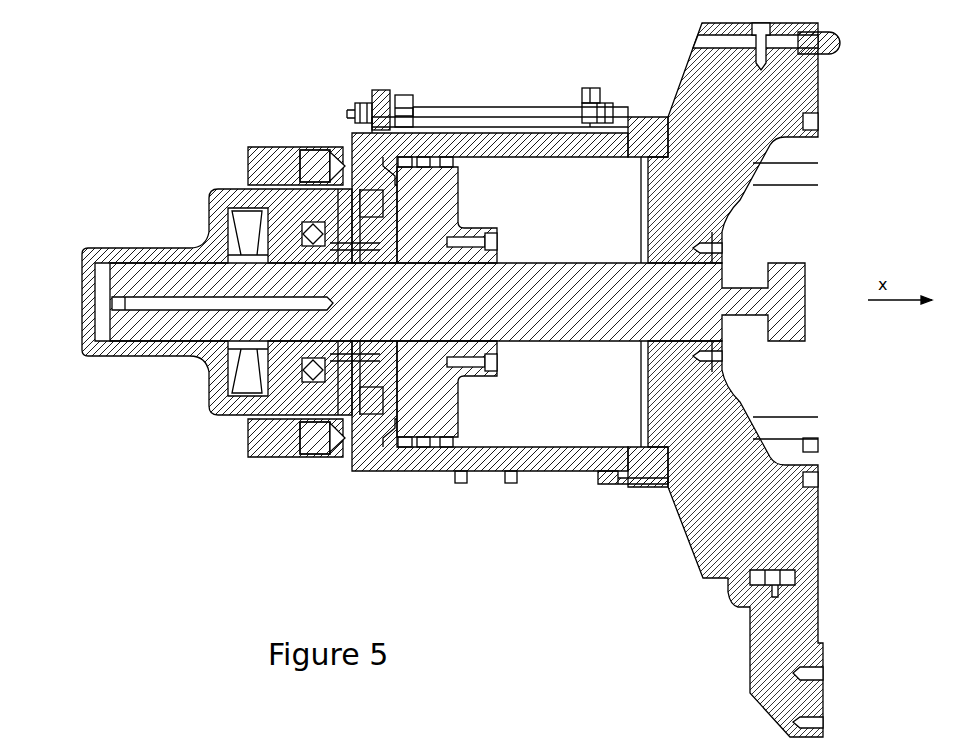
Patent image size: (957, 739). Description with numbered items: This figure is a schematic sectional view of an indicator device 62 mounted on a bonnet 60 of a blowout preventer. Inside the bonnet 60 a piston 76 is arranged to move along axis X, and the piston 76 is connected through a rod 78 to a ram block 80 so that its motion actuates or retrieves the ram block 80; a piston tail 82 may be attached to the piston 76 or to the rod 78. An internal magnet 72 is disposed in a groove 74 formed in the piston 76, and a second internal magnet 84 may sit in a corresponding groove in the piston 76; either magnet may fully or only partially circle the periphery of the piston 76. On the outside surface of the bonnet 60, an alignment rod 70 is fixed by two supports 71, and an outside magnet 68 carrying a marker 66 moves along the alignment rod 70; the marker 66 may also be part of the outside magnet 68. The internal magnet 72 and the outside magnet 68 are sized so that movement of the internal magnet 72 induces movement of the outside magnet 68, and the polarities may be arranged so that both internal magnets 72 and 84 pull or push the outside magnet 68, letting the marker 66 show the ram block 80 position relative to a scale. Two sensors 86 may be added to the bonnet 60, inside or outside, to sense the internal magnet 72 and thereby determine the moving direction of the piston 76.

The bonnet 60 is at (645, 140).
The indicator device 62 is at (384, 86).
The marker 66 is at (414, 128).
The outside magnet 68 is at (403, 92).
The alignment rod 70 is at (490, 108).
The supports 71 is at (370, 98).
The internal magnet 72 is at (377, 458).
The groove 74 is at (405, 437).
The piston 76 is at (463, 413).
The rod 78 is at (567, 280).
The ram block 80 is at (797, 380).
The piston tail 82 is at (162, 280).
The second internal magnet 84 is at (446, 448).
The sensors 86 is at (510, 485).